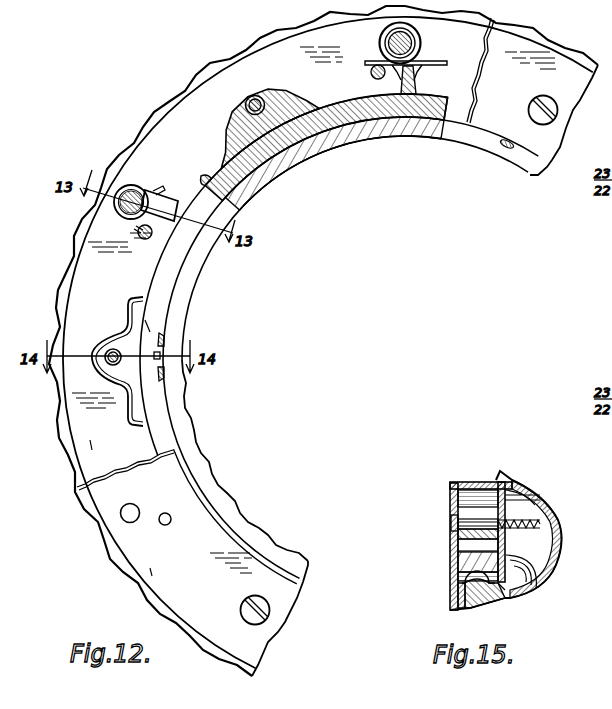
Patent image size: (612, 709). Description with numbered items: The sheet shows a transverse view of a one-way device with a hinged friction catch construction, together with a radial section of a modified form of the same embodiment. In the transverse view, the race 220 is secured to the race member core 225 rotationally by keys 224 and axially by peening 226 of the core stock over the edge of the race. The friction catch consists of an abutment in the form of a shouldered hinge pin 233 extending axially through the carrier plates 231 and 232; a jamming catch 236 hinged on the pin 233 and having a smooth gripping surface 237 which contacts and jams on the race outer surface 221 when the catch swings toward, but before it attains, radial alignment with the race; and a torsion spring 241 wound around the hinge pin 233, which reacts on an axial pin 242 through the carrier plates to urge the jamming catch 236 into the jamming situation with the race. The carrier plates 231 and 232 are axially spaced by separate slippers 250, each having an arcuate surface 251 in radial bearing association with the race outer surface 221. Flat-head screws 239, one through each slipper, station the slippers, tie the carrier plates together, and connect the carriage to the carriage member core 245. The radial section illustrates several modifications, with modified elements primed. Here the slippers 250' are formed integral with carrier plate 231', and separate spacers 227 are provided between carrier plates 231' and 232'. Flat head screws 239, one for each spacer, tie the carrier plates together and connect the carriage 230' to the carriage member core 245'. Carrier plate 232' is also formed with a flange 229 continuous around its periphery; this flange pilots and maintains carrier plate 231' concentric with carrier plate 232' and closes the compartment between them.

In FIG. 12, the carriage member core 245 is at (323, 341).
In FIG. 12, the race 220 is at (310, 126).
In FIG. 15, the race 220 is at (450, 580).
In FIG. 12, the race outer surface 221 is at (240, 178).
In FIG. 12, the race member core 225 is at (280, 158).
In FIG. 15, the race member core 225 is at (500, 584).
In FIG. 12, the flat-head screws 239 is at (244, 105).
In FIG. 15, the flat-head screws 239 is at (450, 524).
In FIG. 12, the shouldered hinge pin 233 is at (420, 40).
In FIG. 12, the torsion spring 241 is at (422, 62).
In FIG. 12, the jamming catch 236 is at (417, 72).
In FIG. 12, the smooth gripping surface 237 is at (418, 86).
In FIG. 12, the axial pin 242 is at (372, 74).
In FIG. 12, the keys 224 is at (535, 152).
In FIG. 15, the keys 224 is at (470, 586).
In FIG. 12, the peening 226 is at (160, 338).
In FIG. 15, the peening 226 is at (447, 590).
In FIG. 12, the slippers 250 is at (163, 355).
In FIG. 12, the arcuate surface 251 is at (143, 325).
In FIG. 12, the carrier plate 231 is at (112, 447).
In FIG. 12, the carrier plate 232 is at (173, 572).
In FIG. 15, the flange 229 is at (460, 481).
In FIG. 15, the carrier plate 232' is at (431, 545).
In FIG. 15, the spacers 227 is at (457, 510).
In FIG. 15, the carriage 230' is at (439, 545).
In FIG. 15, the slippers 250' is at (470, 570).
In FIG. 15, the carriage member core 245' is at (532, 531).
In FIG. 15, the carrier plate 231' is at (546, 494).